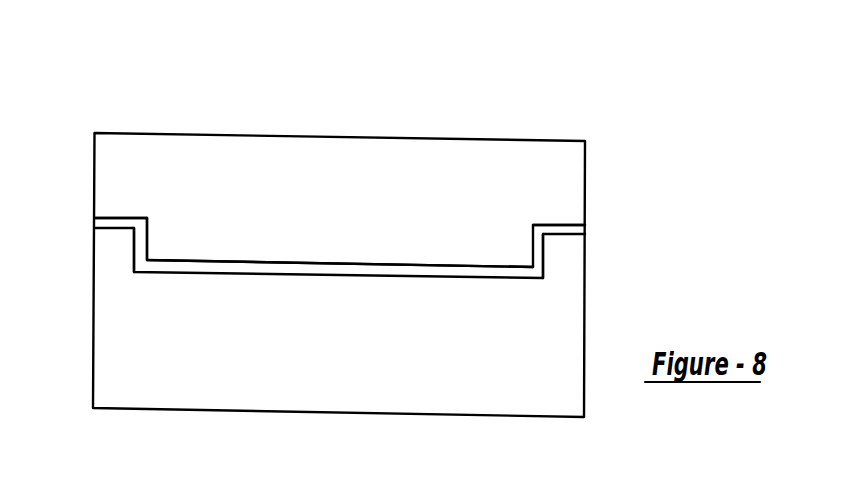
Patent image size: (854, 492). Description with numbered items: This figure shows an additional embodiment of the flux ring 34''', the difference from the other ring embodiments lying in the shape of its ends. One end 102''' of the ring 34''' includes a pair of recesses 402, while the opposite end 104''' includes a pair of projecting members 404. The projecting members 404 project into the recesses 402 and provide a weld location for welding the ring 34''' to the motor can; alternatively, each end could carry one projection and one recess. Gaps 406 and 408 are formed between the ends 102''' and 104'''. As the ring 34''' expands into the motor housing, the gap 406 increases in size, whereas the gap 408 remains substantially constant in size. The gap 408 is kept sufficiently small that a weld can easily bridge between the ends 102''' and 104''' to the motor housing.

The ring 34''' is at (339, 245).
The end 102''' is at (391, 227).
The end 104''' is at (391, 255).
The recess 402 is at (120, 225).
The projecting member 404 is at (115, 252).
The gap 406 is at (212, 267).
The gap 408 is at (140, 243).